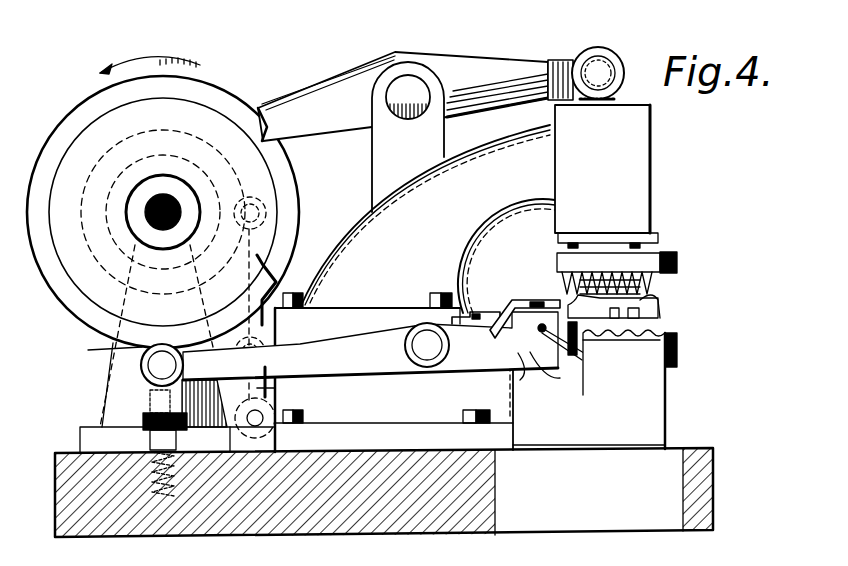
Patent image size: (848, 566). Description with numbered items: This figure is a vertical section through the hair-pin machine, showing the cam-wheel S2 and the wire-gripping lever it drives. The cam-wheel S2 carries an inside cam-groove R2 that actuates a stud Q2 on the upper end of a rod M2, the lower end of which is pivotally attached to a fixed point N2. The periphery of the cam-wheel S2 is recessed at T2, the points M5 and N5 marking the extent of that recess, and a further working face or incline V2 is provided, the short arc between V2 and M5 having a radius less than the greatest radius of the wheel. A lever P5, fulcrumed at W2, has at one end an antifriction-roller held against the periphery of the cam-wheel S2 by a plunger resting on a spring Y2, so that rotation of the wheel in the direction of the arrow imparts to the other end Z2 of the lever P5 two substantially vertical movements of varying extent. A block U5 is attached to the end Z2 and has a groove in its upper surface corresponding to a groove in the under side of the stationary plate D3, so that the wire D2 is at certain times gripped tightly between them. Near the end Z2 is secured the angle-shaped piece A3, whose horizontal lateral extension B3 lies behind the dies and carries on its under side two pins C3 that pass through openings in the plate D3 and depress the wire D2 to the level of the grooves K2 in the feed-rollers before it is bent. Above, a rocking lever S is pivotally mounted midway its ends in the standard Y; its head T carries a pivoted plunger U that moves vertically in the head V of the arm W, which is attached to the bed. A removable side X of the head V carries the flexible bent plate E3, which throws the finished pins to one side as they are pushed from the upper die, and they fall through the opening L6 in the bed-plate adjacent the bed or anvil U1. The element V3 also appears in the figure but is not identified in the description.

The cam-wheel S2 is at (66, 117).
The inside cam-groove R2 is at (134, 155).
The recess T2 is at (268, 168).
The stud Q2 is at (262, 216).
The recess limit point N5 is at (277, 124).
The rocking lever S is at (403, 96).
The standard Y is at (408, 137).
The arm W is at (427, 219).
The head of lever T is at (614, 58).
The plunger U is at (616, 96).
The head of arm V is at (602, 169).
The grooves K2 is at (590, 233).
The recess limit point M5 is at (270, 272).
The angle-shaped piece A3 is at (505, 318).
The horizontal lateral extension B3 is at (538, 302).
The pins C3 is at (613, 307).
The flexible bent plate E3 is at (650, 311).
The stationary plate D3 is at (574, 350).
The wire D2 is at (572, 372).
The bed or anvil U1 is at (648, 377).
The working face or incline V2 is at (102, 346).
The block U5 is at (157, 378).
The side of head X is at (148, 408).
The spring Y2 is at (140, 450).
The rod M2 is at (272, 386).
The fixed point N2 is at (273, 430).
The lever P5 is at (370, 346).
The fulcrum W2 is at (427, 357).
The spring V3 is at (522, 370).
The end of lever Z2 is at (520, 355).
The opening L6 is at (384, 492).